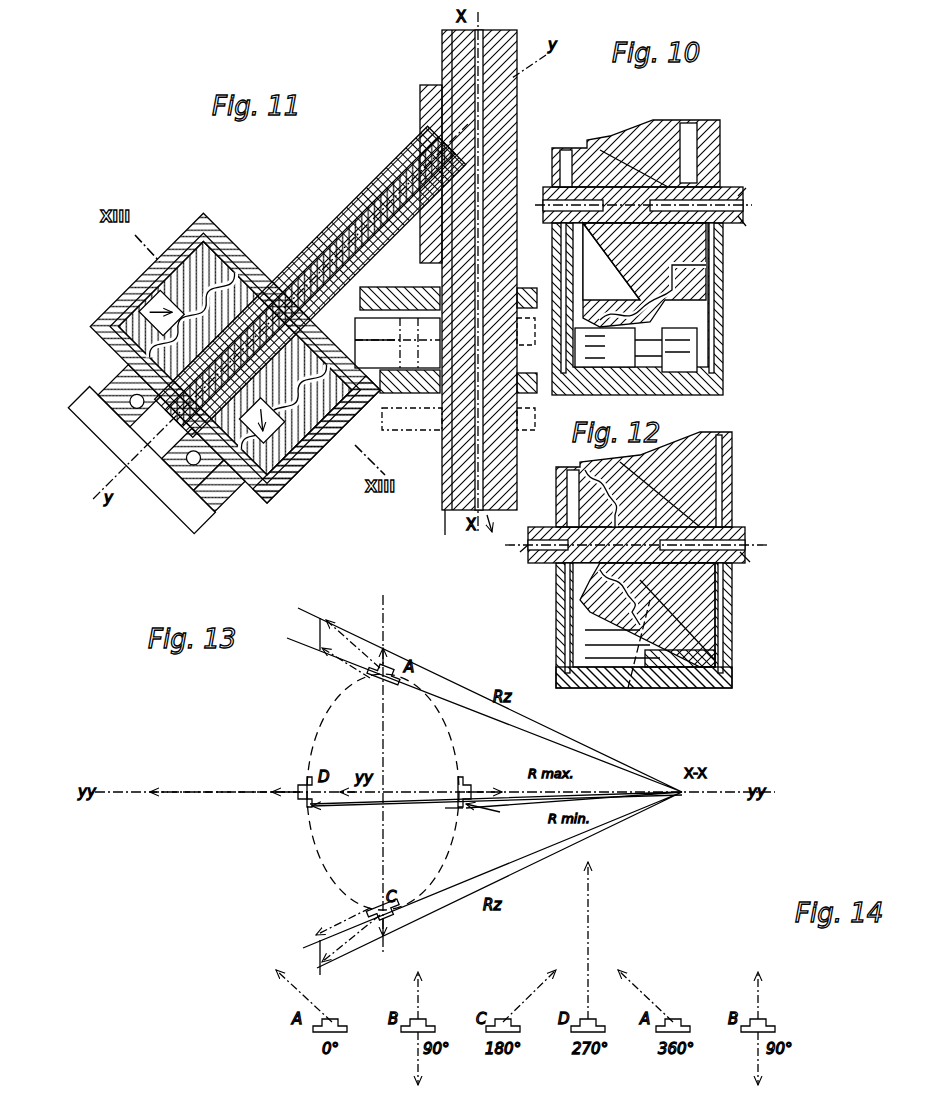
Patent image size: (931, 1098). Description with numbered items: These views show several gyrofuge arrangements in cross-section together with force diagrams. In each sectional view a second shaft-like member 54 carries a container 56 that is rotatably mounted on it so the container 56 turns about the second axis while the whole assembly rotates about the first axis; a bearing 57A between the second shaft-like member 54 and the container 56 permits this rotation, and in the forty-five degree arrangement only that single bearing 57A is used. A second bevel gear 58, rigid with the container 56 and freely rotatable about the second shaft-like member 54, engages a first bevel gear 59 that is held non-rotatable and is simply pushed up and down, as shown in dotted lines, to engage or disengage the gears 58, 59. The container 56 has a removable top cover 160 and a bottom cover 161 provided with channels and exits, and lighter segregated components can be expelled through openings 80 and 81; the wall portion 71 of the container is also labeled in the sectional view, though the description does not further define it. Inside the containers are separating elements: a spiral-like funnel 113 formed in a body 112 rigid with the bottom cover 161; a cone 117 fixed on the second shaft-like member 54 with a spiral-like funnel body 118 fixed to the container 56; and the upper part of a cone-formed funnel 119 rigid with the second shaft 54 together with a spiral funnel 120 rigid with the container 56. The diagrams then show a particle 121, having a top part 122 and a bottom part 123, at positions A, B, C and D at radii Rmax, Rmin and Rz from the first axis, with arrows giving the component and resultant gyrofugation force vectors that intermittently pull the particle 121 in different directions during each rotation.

In FIG. 10, the second shaft-like member 54 is at (590, 152).
In FIG. 12, the second shaft-like member 54 is at (545, 528).
In FIG. 10, the container 56 is at (712, 386).
In FIG. 12, the container 56 is at (682, 690).
In FIG. 11, the container 56 is at (282, 480).
In FIG. 11, the bearing 57A is at (216, 480).
In FIG. 11, the second bevel gear 58 is at (288, 256).
In FIG. 11, the first bevel gear 59 is at (388, 298).
In FIG. 12, the housing side wall 71 is at (560, 628).
In FIG. 12, the opening 80 is at (716, 690).
In FIG. 12, the opening 81 is at (624, 688).
In FIG. 11, the body 112 is at (352, 420).
In FIG. 11, the spiral-like funnel 113 is at (302, 455).
In FIG. 10, the cone 117 is at (606, 142).
In FIG. 10, the spiral-like funnel body 118 is at (665, 128).
In FIG. 12, the cone-formed funnel 119 is at (682, 448).
In FIG. 12, the spiral funnel 120 is at (566, 582).
In FIG. 13, the particle 121 is at (470, 786).
In FIG. 13, the top part 122 is at (476, 800).
In FIG. 13, the bottom part 123 is at (458, 806).
In FIG. 11, the removable top cover 160 is at (226, 252).
In FIG. 11, the bottom cover 161 is at (124, 332).